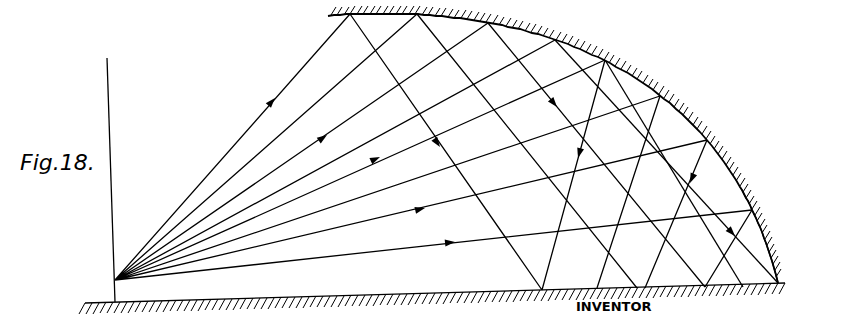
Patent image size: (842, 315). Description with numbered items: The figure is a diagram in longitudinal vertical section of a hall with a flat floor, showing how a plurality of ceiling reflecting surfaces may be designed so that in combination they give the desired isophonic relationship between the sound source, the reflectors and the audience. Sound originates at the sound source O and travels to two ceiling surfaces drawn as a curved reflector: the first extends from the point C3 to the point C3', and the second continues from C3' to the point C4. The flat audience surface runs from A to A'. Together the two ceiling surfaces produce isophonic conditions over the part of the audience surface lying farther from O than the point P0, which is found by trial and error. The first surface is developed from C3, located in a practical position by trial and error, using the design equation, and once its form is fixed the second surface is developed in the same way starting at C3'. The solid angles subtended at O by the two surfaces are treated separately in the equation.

The sound source O is at (424, 158).
The audience surface end point A is at (432, 157).
The audience surface end point A' is at (666, 161).
The ceiling surface starting point C3 is at (542, 144).
The ceiling surface junction point C3' is at (674, 151).
The ceiling surface end point C4 is at (771, 232).
The boundary point on audience surface P0 is at (542, 289).